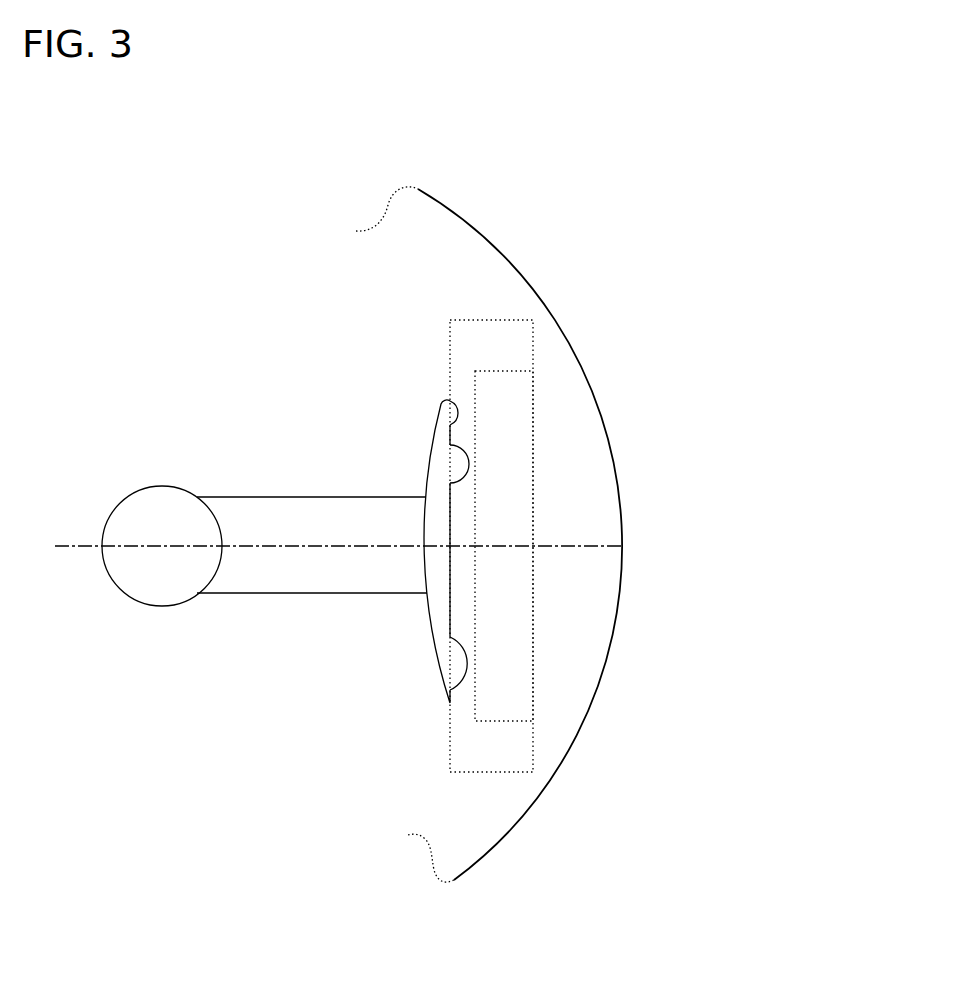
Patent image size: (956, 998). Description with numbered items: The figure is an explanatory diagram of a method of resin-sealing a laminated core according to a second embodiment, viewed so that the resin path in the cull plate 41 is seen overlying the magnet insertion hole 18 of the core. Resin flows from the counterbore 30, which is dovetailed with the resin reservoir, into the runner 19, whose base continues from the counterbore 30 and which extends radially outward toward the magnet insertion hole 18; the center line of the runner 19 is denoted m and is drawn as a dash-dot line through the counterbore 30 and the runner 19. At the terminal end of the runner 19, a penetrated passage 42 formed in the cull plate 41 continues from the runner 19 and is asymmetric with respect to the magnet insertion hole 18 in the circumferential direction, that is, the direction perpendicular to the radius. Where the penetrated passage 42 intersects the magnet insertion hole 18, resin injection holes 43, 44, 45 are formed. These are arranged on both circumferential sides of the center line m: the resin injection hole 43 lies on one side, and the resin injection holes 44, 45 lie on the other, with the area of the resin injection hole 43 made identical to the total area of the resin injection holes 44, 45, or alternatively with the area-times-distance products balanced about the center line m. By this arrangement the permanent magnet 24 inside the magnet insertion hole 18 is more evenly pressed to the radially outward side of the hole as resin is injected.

The center line m is at (303, 545).
The counterbore 30 is at (153, 583).
The runner 19 is at (293, 570).
The penetrated passage 42 is at (432, 568).
The resin injection hole 45 is at (463, 410).
The resin injection hole 44 is at (456, 466).
The resin injection hole 43 is at (458, 667).
The permanent magnet 24 is at (508, 593).
The magnet insertion hole 18 is at (495, 752).
The cull plate 41 is at (573, 747).